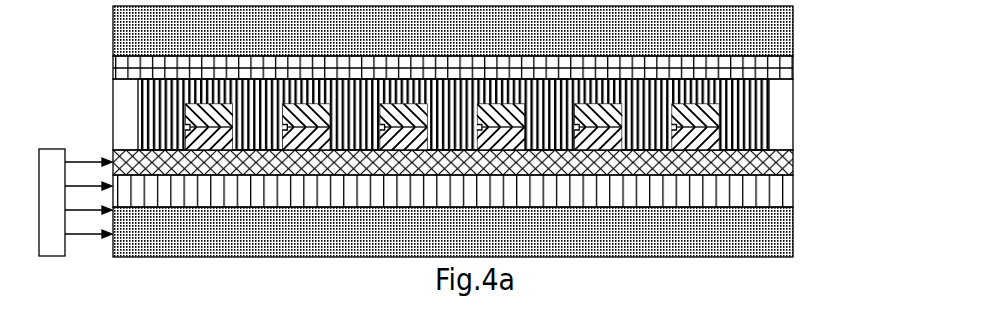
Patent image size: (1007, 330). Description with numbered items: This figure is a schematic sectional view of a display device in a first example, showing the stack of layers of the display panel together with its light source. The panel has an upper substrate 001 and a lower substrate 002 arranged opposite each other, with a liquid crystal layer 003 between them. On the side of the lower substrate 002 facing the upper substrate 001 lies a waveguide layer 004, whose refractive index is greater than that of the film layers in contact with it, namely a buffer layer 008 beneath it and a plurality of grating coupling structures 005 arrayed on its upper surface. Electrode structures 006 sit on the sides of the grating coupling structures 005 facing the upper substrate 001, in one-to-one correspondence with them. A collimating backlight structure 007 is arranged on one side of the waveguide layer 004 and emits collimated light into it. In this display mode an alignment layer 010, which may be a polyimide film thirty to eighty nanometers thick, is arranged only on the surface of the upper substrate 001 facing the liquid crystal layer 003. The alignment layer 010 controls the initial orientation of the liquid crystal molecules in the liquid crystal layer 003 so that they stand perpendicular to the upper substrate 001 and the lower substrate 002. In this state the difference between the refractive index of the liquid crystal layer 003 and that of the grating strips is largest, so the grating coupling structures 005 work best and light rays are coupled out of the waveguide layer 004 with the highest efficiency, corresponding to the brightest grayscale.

The upper substrate 001 is at (793, 33).
The alignment layer 010 is at (775, 70).
The liquid crystal layer 003 is at (763, 90).
The electrode structures 006 is at (697, 115).
The grating coupling structures 005 is at (697, 136).
The waveguide layer 004 is at (793, 165).
The buffer layer 008 is at (778, 197).
The lower substrate 002 is at (782, 235).
The collimating backlight structure 007 is at (59, 160).